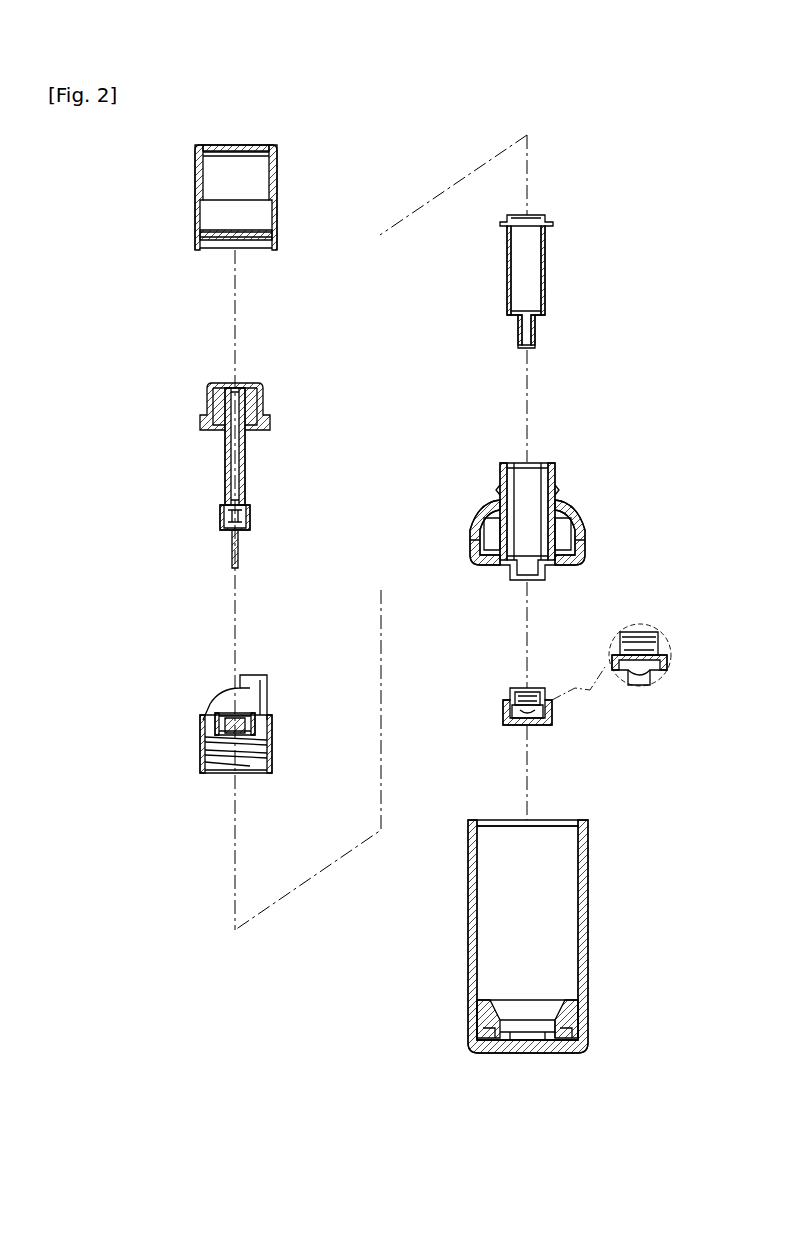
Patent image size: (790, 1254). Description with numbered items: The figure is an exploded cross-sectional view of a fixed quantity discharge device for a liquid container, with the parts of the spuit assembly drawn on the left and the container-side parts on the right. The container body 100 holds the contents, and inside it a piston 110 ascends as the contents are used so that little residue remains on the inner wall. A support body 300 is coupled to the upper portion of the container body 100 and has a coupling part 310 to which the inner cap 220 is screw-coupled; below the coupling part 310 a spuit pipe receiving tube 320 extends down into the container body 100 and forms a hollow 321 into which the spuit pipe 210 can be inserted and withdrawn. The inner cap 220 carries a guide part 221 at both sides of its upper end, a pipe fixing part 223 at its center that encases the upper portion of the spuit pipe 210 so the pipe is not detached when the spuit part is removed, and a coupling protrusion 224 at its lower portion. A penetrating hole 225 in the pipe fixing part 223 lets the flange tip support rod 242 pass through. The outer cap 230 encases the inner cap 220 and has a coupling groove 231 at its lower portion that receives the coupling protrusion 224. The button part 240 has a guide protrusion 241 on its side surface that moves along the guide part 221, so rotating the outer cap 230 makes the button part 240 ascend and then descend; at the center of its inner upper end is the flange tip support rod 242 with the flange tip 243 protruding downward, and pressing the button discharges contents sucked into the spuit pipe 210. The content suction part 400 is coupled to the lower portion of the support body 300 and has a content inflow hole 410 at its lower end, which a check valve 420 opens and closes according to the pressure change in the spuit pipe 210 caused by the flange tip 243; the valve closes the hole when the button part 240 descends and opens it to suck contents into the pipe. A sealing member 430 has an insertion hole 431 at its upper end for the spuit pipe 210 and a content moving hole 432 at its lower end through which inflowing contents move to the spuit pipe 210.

The container body 100 is at (588, 897).
The piston 110 is at (568, 1012).
The spuit pipe 210 is at (548, 272).
The inner cap 220 is at (188, 790).
The guide part 221 is at (265, 710).
The pipe fixing part 223 is at (255, 718).
The coupling protrusion 224 is at (272, 752).
The penetrating hole 225 is at (235, 728).
The outer cap 230 is at (198, 183).
The coupling groove 231 is at (198, 236).
The button part 240 is at (212, 386).
The guide protrusion 241 is at (210, 420).
The flange tip support rod 242 is at (226, 462).
The flange tip 243 is at (219, 518).
The support body 300 is at (585, 512).
The coupling part 310 is at (555, 482).
The spuit pipe receiving tube 320 is at (583, 540).
The hollow 321 is at (518, 504).
The content suction part 400 is at (500, 738).
The content inflow hole 410 is at (650, 678).
The check valve 420 is at (660, 658).
The sealing member 430 is at (508, 698).
The insertion hole 431 is at (530, 698).
The content moving hole 432 is at (640, 676).